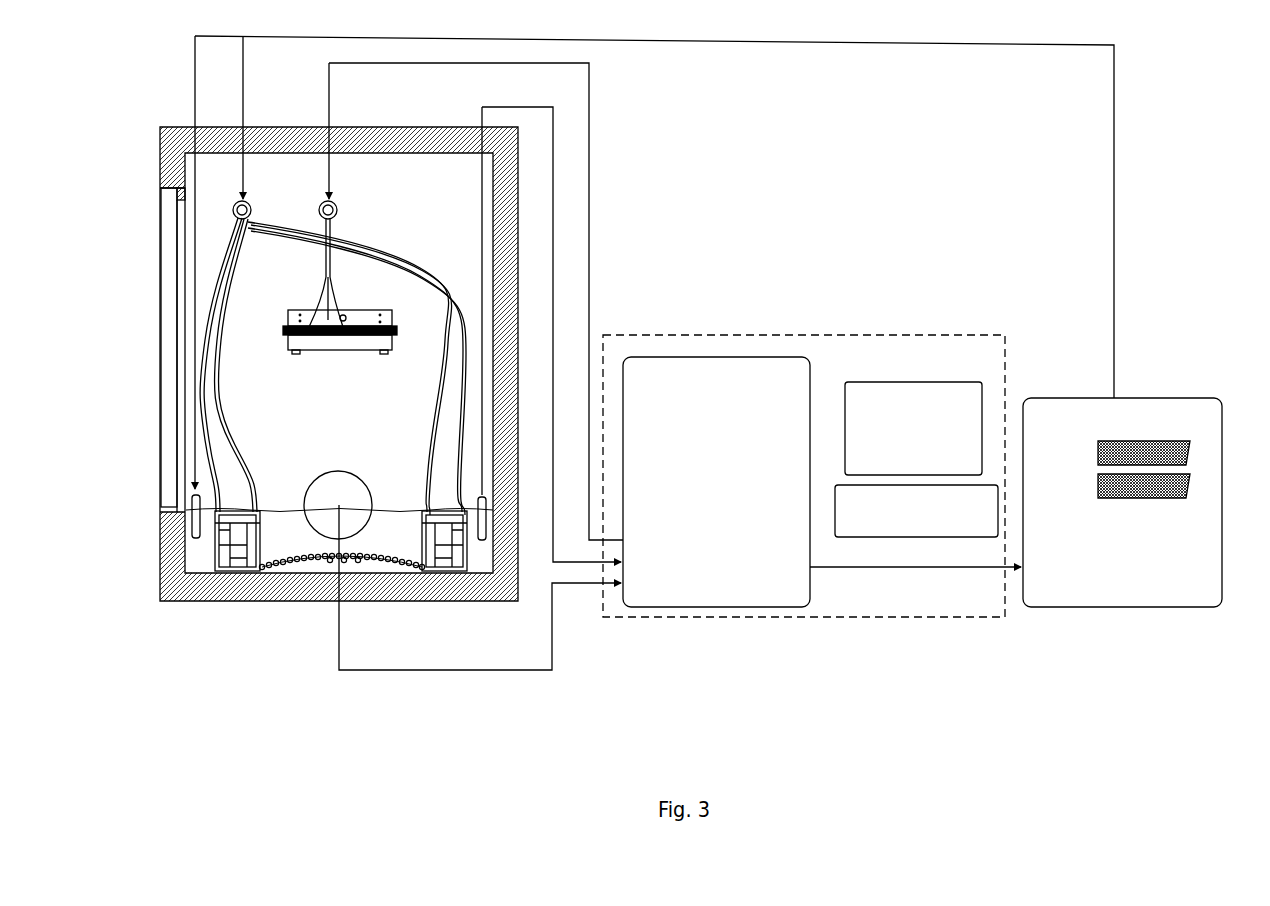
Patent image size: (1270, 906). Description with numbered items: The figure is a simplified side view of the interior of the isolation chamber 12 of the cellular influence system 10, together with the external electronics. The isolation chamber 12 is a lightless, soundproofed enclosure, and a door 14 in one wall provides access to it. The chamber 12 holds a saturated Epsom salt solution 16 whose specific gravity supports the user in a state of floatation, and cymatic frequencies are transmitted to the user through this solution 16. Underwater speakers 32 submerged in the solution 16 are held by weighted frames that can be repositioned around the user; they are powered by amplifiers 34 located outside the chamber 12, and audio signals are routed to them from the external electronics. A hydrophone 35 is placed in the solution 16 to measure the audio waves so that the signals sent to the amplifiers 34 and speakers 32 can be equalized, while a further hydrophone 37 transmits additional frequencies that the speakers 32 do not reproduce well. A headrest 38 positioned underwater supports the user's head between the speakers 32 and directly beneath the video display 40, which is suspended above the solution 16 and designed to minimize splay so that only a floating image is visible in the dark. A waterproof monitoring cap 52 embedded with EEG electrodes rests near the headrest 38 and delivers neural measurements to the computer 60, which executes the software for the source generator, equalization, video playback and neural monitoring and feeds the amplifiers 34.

The cellular influence system 10 is at (1168, 48).
The isolation chamber 12 is at (160, 127).
The door 14 is at (168, 278).
The solution 16 is at (205, 557).
The underwater speakers 32 is at (240, 575).
The amplifiers 34 is at (1152, 398).
The hydrophone 35 is at (483, 543).
The hydrophone 37 is at (192, 530).
The headrest 38 is at (350, 563).
The video display 40 is at (289, 350).
The monitoring cap 52 is at (320, 520).
The computer 60 is at (792, 335).